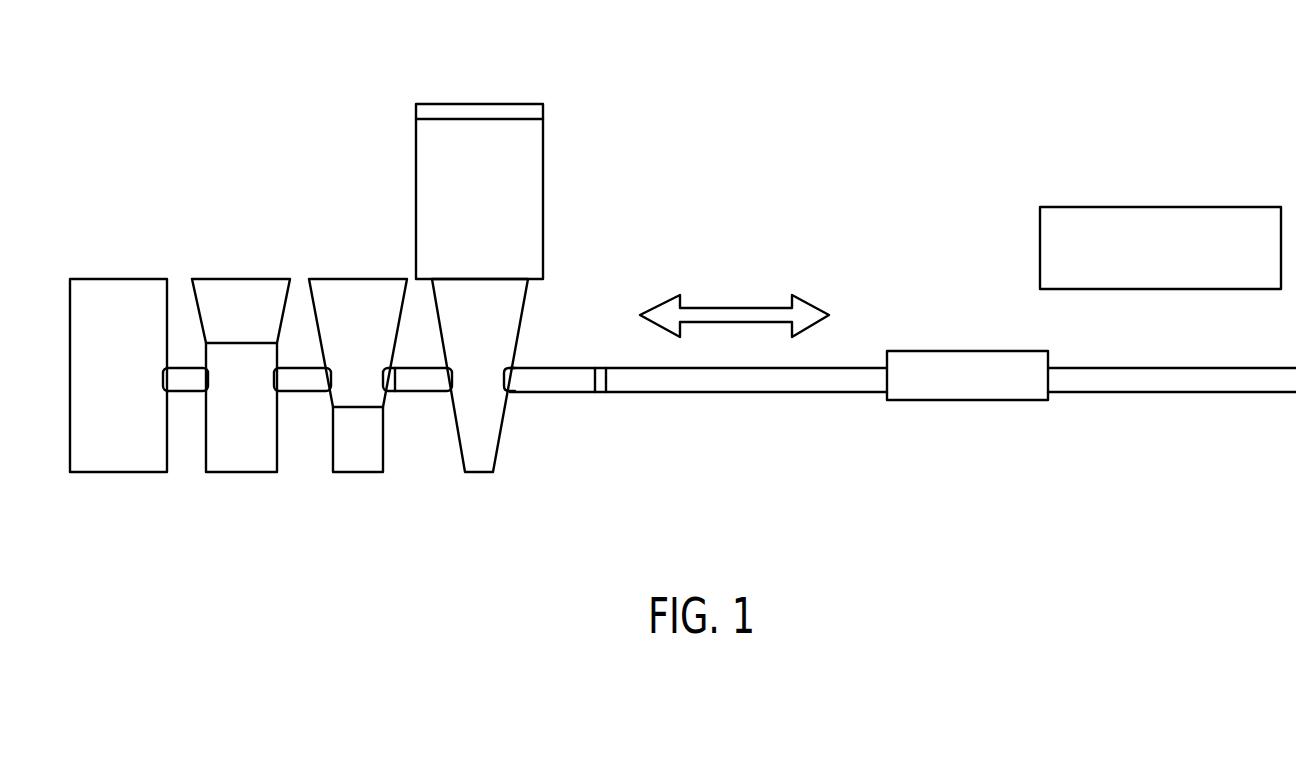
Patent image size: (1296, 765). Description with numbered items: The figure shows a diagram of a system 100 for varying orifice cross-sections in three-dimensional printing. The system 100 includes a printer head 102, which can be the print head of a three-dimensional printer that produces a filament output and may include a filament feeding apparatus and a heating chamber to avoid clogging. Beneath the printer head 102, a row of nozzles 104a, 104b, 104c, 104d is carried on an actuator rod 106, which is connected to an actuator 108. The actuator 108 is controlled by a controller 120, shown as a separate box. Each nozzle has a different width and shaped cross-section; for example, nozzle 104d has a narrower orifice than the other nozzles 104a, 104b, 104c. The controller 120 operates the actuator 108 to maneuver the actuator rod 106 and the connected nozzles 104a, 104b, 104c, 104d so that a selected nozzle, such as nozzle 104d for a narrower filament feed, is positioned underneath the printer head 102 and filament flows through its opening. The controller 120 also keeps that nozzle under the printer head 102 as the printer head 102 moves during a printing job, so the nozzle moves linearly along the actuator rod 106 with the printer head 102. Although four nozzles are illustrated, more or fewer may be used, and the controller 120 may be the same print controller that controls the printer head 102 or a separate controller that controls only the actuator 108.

The system 100 is at (1212, 110).
The printer head 102 is at (416, 168).
The nozzle 104a is at (119, 457).
The nozzle 104b is at (242, 457).
The nozzle 104c is at (358, 457).
The nozzle 104d is at (480, 457).
The actuator rod 106 is at (682, 382).
The actuator 108 is at (966, 382).
The controller 120 is at (1083, 232).